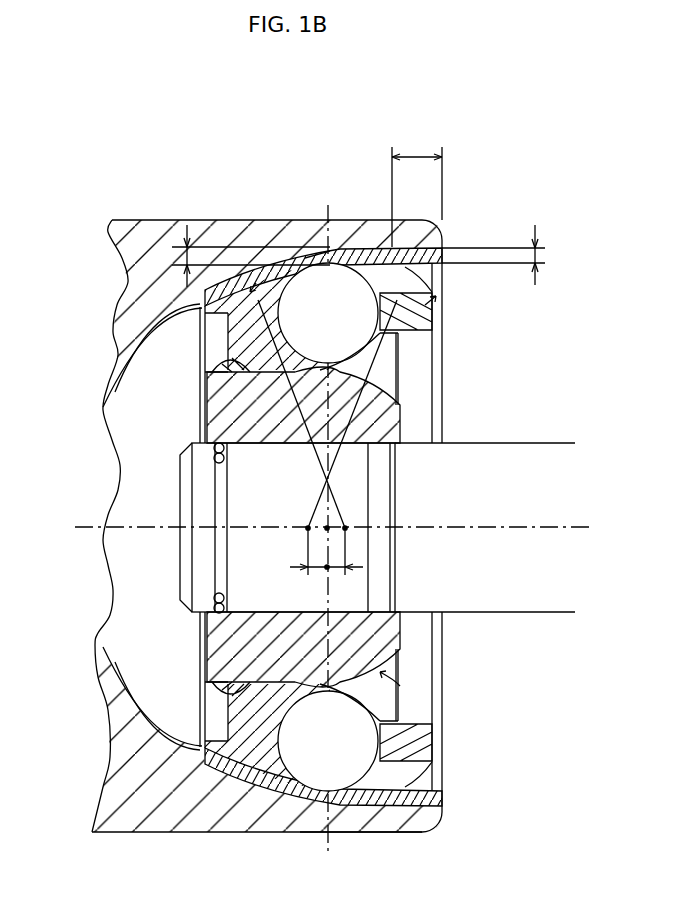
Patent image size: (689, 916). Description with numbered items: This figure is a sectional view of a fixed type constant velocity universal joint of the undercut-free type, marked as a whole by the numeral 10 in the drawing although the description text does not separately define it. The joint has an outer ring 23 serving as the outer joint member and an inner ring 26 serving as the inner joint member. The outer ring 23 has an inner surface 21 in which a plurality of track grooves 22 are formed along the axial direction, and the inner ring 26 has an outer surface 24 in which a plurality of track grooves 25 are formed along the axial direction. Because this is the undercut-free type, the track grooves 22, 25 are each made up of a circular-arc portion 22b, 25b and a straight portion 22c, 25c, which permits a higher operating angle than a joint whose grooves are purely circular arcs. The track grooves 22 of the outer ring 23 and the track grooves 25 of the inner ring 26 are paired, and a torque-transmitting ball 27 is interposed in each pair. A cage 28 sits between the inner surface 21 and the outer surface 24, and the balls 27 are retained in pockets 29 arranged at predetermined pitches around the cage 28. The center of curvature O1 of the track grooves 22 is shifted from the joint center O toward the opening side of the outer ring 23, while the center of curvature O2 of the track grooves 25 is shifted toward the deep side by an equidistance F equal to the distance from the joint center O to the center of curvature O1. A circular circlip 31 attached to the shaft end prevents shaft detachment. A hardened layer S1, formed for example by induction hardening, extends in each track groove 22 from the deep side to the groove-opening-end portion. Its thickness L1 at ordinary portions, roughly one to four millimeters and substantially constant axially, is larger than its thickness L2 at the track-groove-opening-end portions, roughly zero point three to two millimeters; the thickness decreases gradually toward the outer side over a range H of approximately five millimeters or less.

The shaft 10 is at (537, 436).
The inner surface 21 is at (223, 750).
The track grooves 22 is at (432, 332).
The circular-arc portion 22b is at (200, 310).
The straight portion 22c is at (434, 281).
The outer ring 23 is at (395, 845).
The outer surface 24 is at (265, 735).
The track grooves 25 is at (228, 350).
The circular-arc portion 25b is at (395, 376).
The straight portion 25c is at (205, 378).
The inner ring 26 is at (408, 402).
The balls 27 is at (354, 290).
The cage 28 is at (437, 297).
The pockets 29 is at (298, 290).
The circlip 31 is at (215, 603).
The hardened layer S1 is at (328, 527).
The joint center O is at (327, 528).
The center of curvature O1 is at (345, 527).
The center of curvature O2 is at (308, 527).
The equidistance F is at (326, 564).
The range H is at (417, 188).
The thickness of the hardened layers L1 is at (167, 247).
The thickness of the hardened layers L2 is at (555, 255).